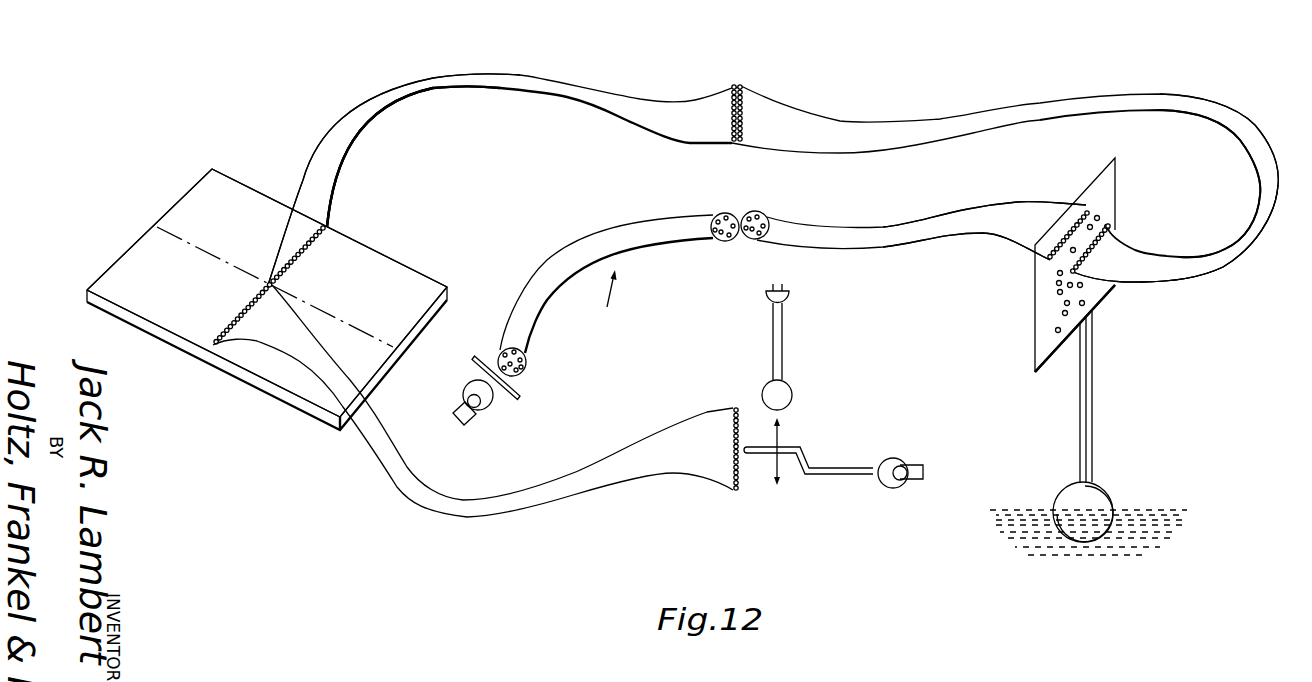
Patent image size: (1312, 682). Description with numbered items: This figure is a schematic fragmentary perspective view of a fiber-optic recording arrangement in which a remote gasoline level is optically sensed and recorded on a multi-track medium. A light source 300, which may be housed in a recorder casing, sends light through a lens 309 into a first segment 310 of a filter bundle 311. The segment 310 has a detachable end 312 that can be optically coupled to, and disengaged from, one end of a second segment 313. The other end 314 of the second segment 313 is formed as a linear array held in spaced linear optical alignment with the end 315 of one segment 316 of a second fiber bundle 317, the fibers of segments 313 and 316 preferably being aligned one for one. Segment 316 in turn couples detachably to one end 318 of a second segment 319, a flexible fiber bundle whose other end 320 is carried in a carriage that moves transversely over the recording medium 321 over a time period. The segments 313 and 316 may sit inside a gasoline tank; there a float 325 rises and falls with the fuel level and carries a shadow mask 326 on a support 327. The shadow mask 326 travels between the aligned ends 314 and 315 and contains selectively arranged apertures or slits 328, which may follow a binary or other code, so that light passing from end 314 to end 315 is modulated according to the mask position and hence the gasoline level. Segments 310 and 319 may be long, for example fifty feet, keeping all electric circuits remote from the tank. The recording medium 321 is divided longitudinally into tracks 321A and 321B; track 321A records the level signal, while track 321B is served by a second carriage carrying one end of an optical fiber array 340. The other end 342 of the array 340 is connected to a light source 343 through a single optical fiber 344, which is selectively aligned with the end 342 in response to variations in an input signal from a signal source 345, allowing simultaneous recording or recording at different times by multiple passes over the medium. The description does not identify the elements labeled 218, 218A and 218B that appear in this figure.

The fluid circuit conduit 218 is at (1160, 283).
The conduit section 218A is at (313, 198).
The conduit section 218B is at (1027, 221).
The light source 300 is at (488, 407).
The lens 309 is at (518, 397).
The first segment 310 is at (584, 262).
The filter bundle 311 is at (612, 303).
The end 312 is at (718, 240).
The second segment 313 is at (898, 233).
The other end 314 is at (1069, 230).
The end 315 is at (1090, 250).
The segment 316 is at (1266, 165).
The second fiber bundle 317 is at (630, 80).
The end 318 is at (730, 115).
The second segment 319 is at (438, 86).
The other end 320 is at (303, 246).
The recording medium 321 is at (231, 173).
The track 321A is at (200, 212).
The track 321B is at (150, 290).
The float 325 is at (1060, 490).
The shadow mask 326 is at (1110, 290).
The support 327 is at (1094, 427).
The apertures or slits 328 is at (1100, 203).
The optical fiber array 340 is at (390, 469).
The other end 342 is at (740, 483).
The light source 343 is at (893, 488).
The single optical fiber 344 is at (832, 467).
The signal source 345 is at (783, 302).